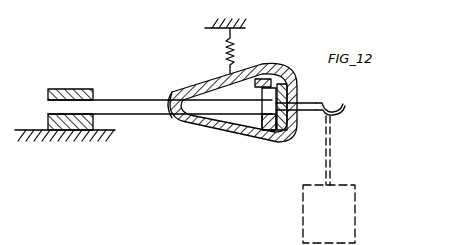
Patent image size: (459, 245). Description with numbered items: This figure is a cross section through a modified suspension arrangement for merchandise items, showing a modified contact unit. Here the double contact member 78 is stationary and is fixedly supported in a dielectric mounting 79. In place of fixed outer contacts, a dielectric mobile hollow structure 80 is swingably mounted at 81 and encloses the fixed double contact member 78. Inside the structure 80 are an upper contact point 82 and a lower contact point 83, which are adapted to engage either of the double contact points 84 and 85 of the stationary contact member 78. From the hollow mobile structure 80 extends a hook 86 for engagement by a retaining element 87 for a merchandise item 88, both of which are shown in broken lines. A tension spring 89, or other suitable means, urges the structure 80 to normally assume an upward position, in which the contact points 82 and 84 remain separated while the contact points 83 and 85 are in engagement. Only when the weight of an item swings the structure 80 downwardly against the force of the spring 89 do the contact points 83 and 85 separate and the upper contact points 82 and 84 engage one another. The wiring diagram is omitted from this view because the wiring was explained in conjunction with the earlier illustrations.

The double contact member 78 is at (136, 115).
The dielectric mounting 79 is at (80, 89).
The dielectric mobile hollow structure 80 is at (200, 124).
The swing mounting 81 is at (174, 92).
The upper contact point 82 is at (264, 82).
The lower contact point 83 is at (282, 142).
The double contact point 84 is at (298, 96).
The double contact point 85 is at (258, 132).
The hook 86 is at (346, 104).
The retaining element 87 is at (335, 137).
The merchandise item 88 is at (356, 192).
The tension spring 89 is at (236, 48).